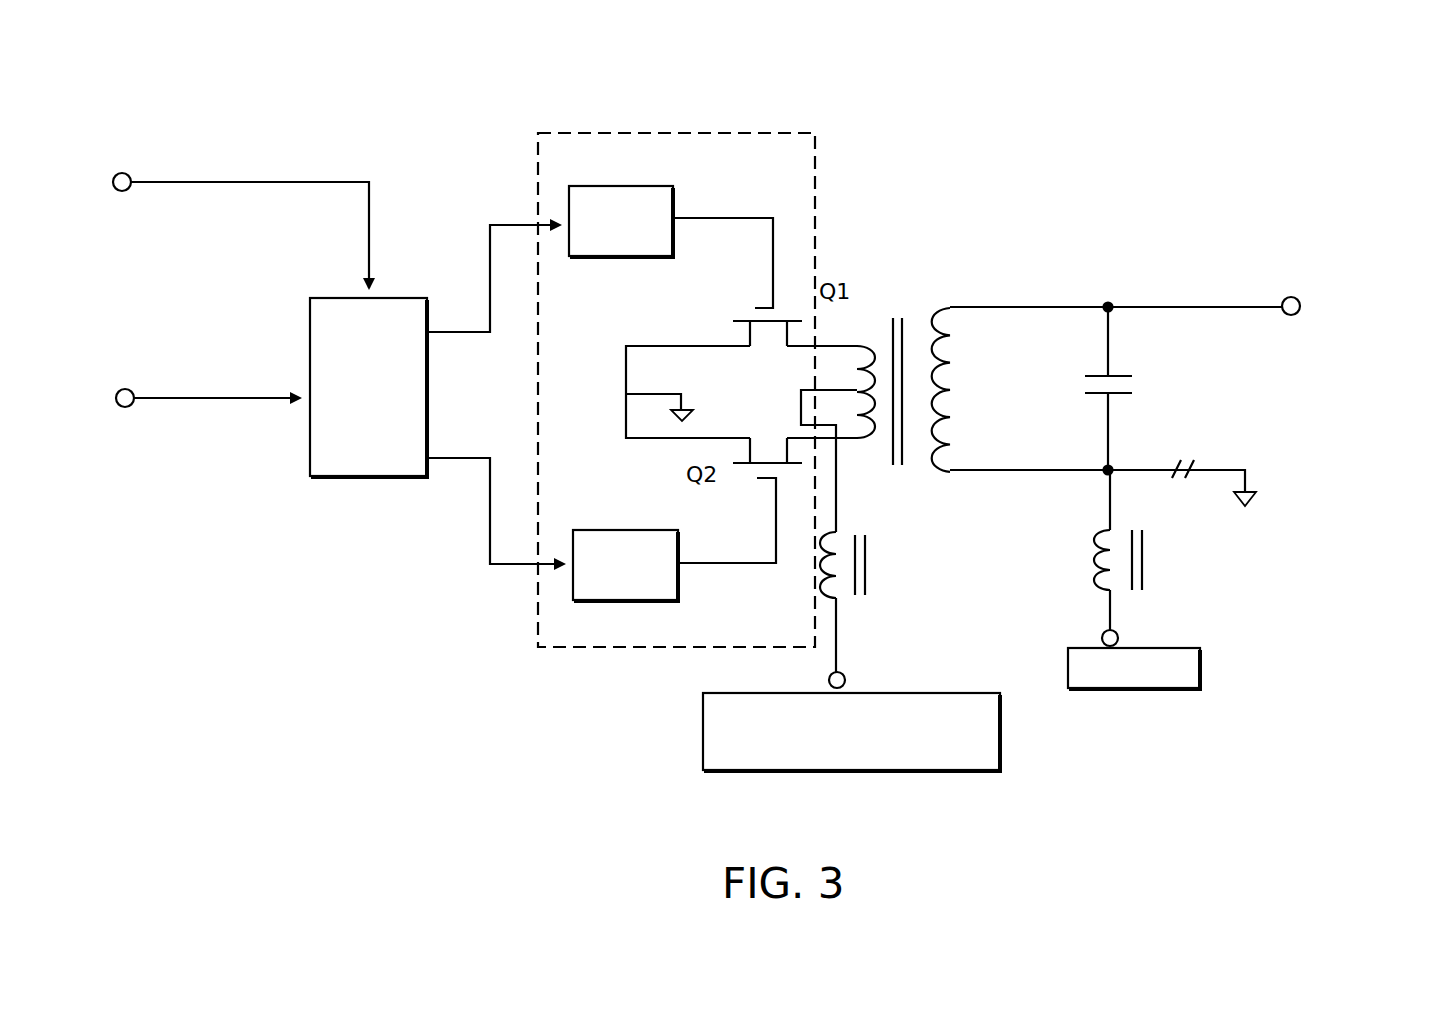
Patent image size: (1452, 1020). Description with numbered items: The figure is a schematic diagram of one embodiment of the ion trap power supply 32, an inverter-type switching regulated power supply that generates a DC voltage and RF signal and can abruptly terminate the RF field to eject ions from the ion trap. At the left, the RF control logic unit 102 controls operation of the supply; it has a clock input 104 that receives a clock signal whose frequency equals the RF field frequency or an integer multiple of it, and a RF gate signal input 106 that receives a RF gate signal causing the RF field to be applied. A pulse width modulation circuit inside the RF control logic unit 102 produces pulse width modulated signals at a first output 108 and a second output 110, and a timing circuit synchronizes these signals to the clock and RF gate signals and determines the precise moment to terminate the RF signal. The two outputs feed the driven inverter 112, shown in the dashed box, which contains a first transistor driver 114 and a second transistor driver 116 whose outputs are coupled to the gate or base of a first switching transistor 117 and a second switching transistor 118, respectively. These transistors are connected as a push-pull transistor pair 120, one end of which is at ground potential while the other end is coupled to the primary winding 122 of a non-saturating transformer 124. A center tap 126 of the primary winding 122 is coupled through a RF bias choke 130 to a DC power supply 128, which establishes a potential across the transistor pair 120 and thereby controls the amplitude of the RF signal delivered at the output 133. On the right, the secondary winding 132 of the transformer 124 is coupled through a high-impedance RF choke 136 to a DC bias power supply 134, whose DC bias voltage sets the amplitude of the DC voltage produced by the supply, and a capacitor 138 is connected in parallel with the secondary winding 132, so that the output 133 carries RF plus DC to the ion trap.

The ion trap power supply 32 is at (795, 60).
The RF control logic unit 102 is at (375, 478).
The clock input 104 is at (305, 405).
The RF gate signal input 106 is at (379, 296).
The first output 108 is at (430, 337).
The second output 110 is at (430, 458).
The driven inverter 112 is at (814, 155).
The first transistor driver 114 is at (676, 212).
The second transistor driver 116 is at (680, 588).
The first switching transistor 117 is at (782, 310).
The second switching transistor 118 is at (748, 492).
The push-pull transistor pair 120 is at (755, 393).
The primary winding 122 is at (848, 358).
The non-saturating transformer 124 is at (898, 307).
The center tap 126 is at (801, 392).
The DC power supply 128 is at (1003, 760).
The RF bias choke 130 is at (893, 592).
The secondary winding 132 is at (956, 381).
The output 133 is at (1302, 308).
The DC bias power supply 134 is at (1205, 686).
The RF choke 136 is at (1167, 590).
The capacitor 138 is at (1128, 393).